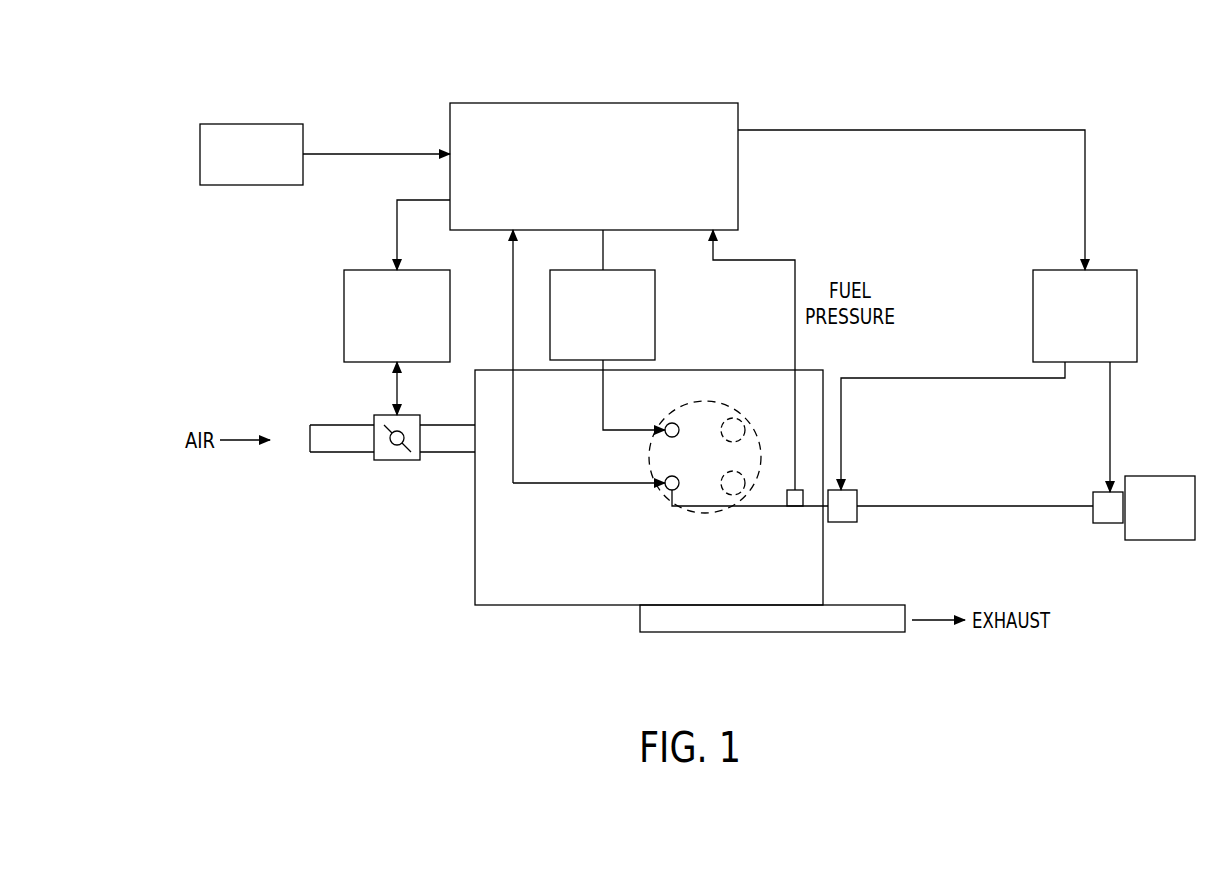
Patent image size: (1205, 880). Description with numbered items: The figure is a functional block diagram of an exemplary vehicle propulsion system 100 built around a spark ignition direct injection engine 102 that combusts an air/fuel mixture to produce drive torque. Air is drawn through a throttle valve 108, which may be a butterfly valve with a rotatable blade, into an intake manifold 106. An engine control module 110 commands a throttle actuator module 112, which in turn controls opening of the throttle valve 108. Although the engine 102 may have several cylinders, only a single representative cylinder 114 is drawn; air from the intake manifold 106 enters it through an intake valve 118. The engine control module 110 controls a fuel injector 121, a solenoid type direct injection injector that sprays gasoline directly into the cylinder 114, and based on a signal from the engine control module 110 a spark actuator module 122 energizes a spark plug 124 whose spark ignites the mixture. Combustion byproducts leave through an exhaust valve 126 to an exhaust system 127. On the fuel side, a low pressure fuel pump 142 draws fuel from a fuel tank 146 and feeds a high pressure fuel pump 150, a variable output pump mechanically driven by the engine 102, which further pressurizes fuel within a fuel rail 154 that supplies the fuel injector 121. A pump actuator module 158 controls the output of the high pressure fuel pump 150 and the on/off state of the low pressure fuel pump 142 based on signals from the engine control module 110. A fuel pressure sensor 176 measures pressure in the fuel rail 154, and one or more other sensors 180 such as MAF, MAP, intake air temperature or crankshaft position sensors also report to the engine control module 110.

The vehicle propulsion system 100 is at (300, 70).
The other sensors 180 is at (253, 124).
The engine control module 110 is at (592, 103).
The throttle actuator module 112 is at (365, 270).
The throttle valve 108 is at (397, 460).
The engine 102 is at (780, 370).
The intake manifold 106 is at (495, 370).
The spark actuator module 122 is at (657, 318).
The cylinder 114 is at (686, 512).
The spark plug 124 is at (668, 424).
The intake valve 118 is at (735, 420).
The exhaust valve 126 is at (734, 497).
The fuel injector 121 is at (667, 488).
The fuel rail 154 is at (780, 507).
The fuel pressure sensor 176 is at (798, 507).
The high pressure fuel pump 150 is at (843, 515).
The pump actuator module 158 is at (1110, 270).
The low pressure fuel pump 142 is at (1110, 515).
The fuel tank 146 is at (1160, 530).
The exhaust system 127 is at (877, 632).